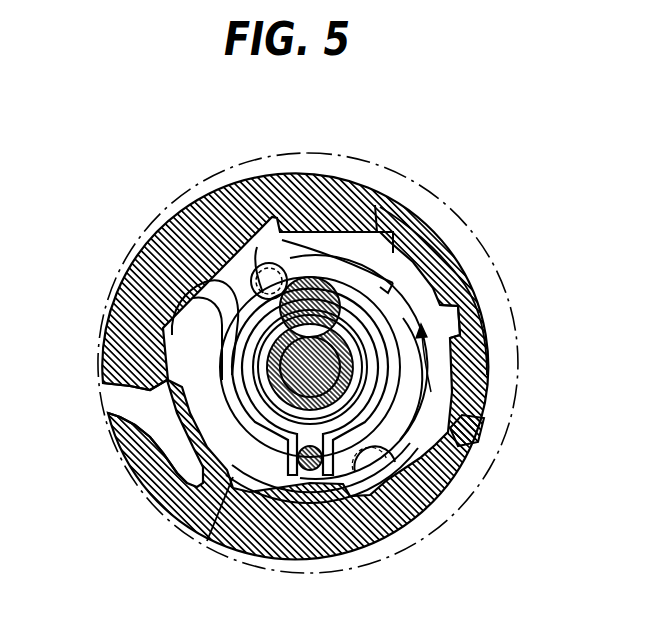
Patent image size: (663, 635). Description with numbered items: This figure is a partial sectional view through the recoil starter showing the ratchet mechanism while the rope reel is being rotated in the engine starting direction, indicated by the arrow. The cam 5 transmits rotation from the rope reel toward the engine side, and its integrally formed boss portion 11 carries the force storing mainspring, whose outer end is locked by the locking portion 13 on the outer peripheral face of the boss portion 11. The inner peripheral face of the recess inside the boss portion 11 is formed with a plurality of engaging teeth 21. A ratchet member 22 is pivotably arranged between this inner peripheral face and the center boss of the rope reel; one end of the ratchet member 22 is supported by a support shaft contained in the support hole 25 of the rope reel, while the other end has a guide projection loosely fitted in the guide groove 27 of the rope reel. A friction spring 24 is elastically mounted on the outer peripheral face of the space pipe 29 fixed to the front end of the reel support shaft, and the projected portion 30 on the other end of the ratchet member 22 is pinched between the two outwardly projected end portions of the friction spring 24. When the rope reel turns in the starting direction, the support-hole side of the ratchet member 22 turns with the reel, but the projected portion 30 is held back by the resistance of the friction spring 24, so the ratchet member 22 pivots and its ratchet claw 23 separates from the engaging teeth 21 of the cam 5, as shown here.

The cam 5 is at (517, 368).
The boss portion 11 is at (157, 230).
The locking portion 13 is at (110, 413).
The engaging teeth 21 is at (377, 220).
The ratchet member 22 is at (470, 311).
The ratchet claw 23 is at (440, 253).
The friction spring 24 is at (270, 430).
The support hole 25 is at (270, 267).
The guide groove 27 is at (350, 480).
The space pipe 29 is at (262, 367).
The projected portion 30 is at (311, 470).